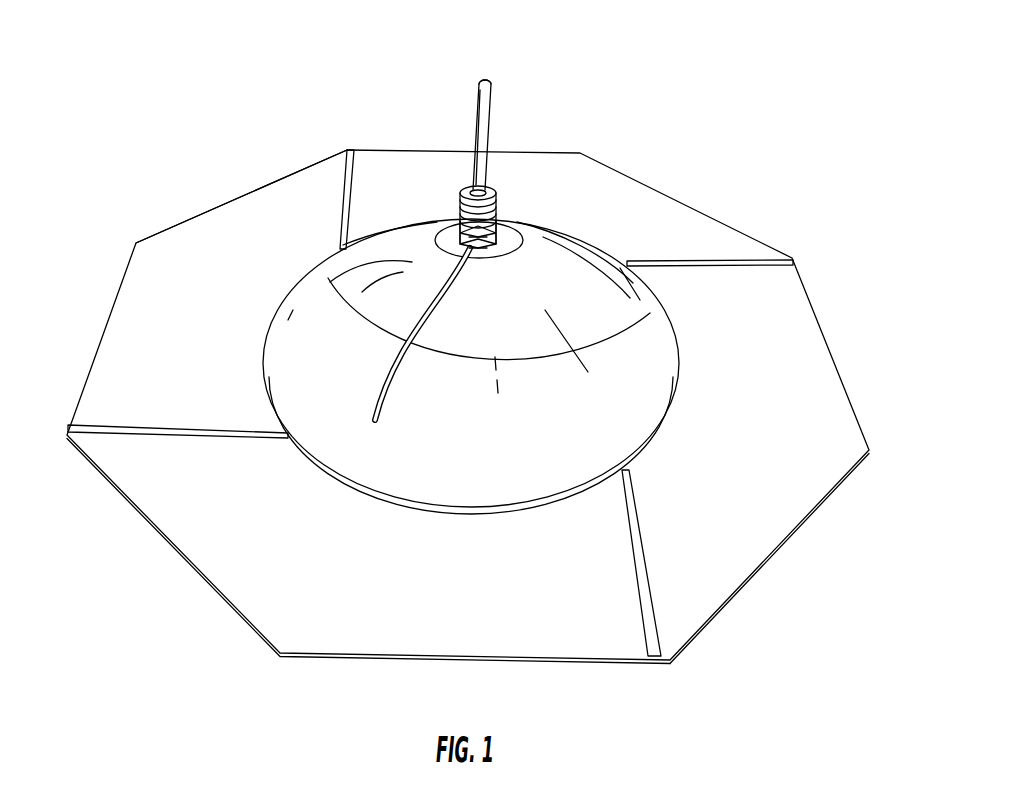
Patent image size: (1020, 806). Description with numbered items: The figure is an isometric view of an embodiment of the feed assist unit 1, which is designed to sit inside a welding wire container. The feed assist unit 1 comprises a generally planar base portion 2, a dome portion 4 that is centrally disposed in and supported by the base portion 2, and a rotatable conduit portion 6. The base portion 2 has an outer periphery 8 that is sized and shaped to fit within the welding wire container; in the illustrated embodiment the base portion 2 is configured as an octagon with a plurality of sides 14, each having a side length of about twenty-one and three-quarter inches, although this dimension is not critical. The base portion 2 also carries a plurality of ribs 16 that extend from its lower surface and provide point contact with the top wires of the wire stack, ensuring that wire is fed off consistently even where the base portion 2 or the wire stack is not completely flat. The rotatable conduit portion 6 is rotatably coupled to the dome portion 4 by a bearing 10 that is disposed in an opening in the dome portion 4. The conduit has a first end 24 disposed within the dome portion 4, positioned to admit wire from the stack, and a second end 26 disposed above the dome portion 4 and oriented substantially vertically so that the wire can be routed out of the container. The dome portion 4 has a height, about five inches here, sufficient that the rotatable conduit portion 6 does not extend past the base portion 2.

The feed assist unit 1 is at (680, 90).
The base portion 2 is at (802, 322).
The dome portion 4 is at (568, 273).
The rotatable conduit portion 6 is at (492, 132).
The outer periphery 8 is at (805, 530).
The bearing 10 is at (498, 192).
The sides 14 is at (760, 570).
The ribs 16 is at (335, 200).
The first end 24 is at (377, 425).
The second end 26 is at (478, 75).